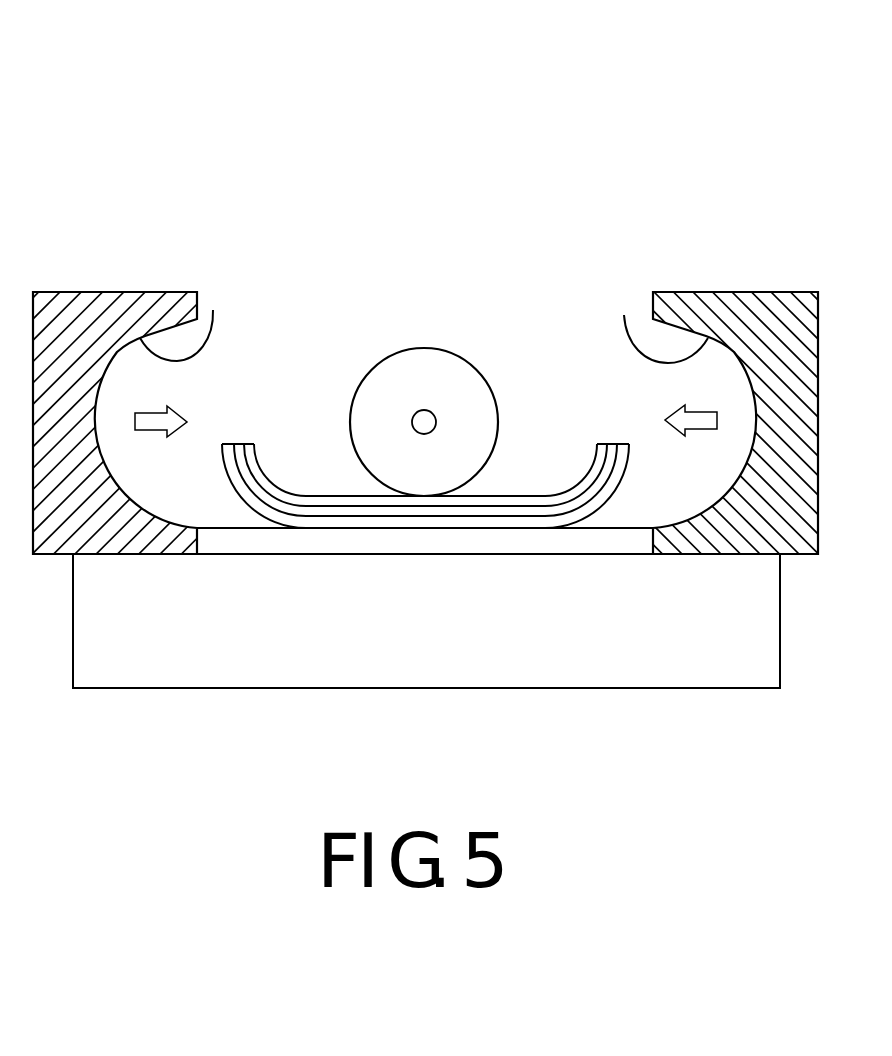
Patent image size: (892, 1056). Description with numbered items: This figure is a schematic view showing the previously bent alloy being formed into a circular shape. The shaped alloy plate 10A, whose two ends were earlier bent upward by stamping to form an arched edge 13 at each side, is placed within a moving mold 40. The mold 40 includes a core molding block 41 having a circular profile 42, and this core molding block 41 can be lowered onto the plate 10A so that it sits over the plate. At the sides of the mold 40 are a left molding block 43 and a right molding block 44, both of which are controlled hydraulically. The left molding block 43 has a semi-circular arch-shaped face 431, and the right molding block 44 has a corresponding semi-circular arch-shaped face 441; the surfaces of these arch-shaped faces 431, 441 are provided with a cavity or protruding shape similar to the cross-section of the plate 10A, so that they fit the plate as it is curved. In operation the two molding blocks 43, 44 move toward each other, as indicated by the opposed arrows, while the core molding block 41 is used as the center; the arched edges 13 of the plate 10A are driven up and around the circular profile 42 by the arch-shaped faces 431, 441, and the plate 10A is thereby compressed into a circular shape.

The moving mold 40 is at (690, 107).
The core molding block 41 is at (415, 365).
The circular profile 42 is at (485, 377).
The left molding block 43 is at (92, 291).
The semi-circular arch-shaped face 431 is at (213, 310).
The right molding block 44 is at (742, 291).
The semi-circular arch-shaped face 441 is at (624, 315).
The arched edge 13 is at (272, 462).
The shaped alloy plate 10A is at (323, 495).